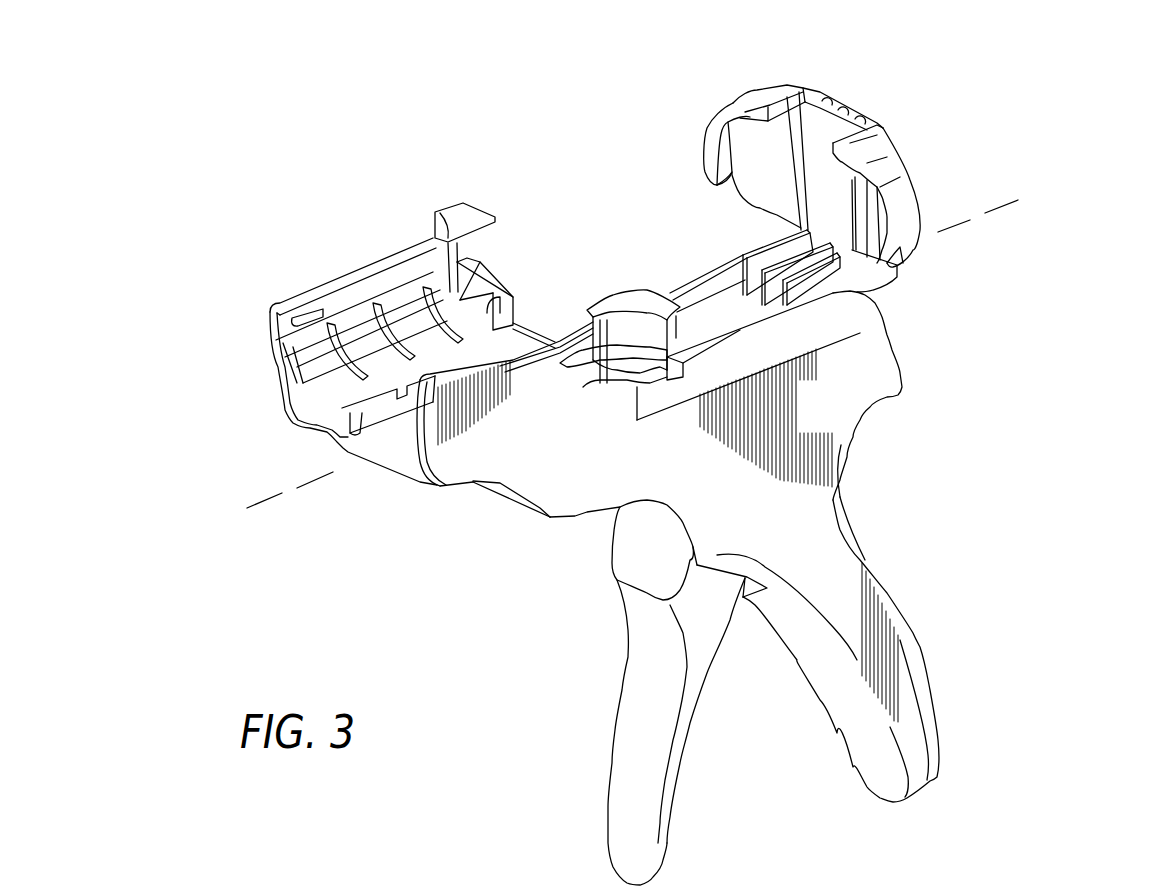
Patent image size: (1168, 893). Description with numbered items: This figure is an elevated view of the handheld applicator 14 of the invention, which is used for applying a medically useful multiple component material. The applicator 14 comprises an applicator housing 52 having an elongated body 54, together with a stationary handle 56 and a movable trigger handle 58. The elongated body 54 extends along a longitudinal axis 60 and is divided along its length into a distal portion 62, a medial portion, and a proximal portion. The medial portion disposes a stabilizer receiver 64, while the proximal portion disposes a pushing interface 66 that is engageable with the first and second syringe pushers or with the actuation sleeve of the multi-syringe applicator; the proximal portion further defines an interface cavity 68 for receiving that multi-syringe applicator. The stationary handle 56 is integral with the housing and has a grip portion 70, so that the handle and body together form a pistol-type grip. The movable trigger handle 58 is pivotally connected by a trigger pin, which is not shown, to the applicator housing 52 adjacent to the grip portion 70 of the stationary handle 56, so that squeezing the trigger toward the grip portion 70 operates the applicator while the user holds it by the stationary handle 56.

The handheld applicator 14 is at (1080, 132).
The applicator housing 52 is at (942, 382).
The elongated body 54 is at (517, 484).
The stationary handle 56 is at (912, 638).
The movable trigger handle 58 is at (617, 753).
The longitudinal axis 60 is at (632, 357).
The distal portion 62 is at (272, 313).
The stabilizer receiver 64 is at (483, 282).
The pushing interface 66 is at (835, 128).
The interface cavity 68 is at (370, 291).
The grip portion 70 is at (920, 678).